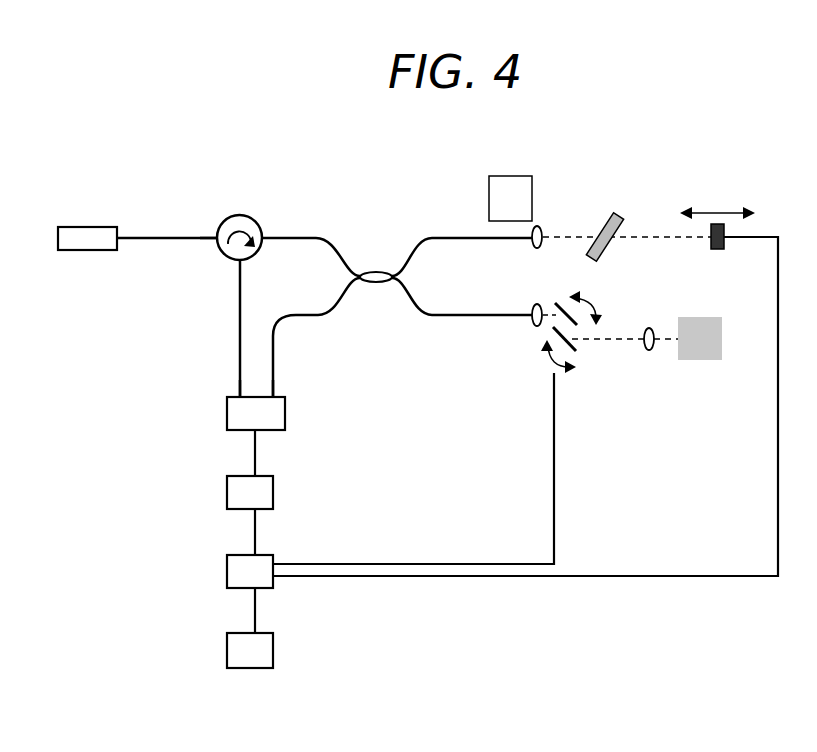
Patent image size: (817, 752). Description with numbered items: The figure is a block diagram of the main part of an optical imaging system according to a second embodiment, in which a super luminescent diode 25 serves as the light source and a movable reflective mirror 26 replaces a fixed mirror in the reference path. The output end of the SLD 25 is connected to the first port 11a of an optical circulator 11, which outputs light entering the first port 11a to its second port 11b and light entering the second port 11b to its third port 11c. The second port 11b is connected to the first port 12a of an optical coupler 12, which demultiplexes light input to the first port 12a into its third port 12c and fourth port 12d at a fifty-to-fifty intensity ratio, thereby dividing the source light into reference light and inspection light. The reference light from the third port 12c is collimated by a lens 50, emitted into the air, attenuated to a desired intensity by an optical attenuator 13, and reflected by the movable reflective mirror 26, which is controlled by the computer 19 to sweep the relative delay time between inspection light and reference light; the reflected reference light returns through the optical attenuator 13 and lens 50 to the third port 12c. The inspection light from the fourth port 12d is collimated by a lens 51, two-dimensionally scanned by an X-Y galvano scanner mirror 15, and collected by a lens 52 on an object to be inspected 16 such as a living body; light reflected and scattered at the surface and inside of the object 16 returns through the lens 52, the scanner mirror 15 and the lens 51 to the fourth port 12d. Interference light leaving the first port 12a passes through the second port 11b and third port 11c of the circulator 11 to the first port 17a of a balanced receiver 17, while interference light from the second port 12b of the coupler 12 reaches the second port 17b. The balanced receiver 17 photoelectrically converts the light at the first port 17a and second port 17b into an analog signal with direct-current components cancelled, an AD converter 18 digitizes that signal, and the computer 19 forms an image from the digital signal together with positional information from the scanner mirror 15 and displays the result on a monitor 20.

The super luminescent diode 25 is at (137, 198).
The optical circulator 11 is at (253, 203).
The first port 11a is at (203, 226).
The second port 11b is at (289, 226).
The third port 11c is at (253, 328).
The optical coupler 12 is at (402, 283).
The first port 12a is at (338, 251).
The second port 12b is at (316, 337).
The third port 12c is at (461, 251).
The fourth port 12d is at (461, 305).
The lens 50 is at (552, 196).
The optical attenuator 13 is at (612, 197).
The movable reflective mirror 26 is at (717, 196).
The object to be inspected 16 is at (715, 303).
The lens 51 is at (506, 342).
The X-Y galvano scanner mirror 15 is at (548, 361).
The lens 52 is at (634, 378).
The balanced receiver 17 is at (227, 402).
The first port 17a is at (220, 385).
The second port 17b is at (291, 385).
The AD converter 18 is at (209, 486).
The computer 19 is at (209, 566).
The monitor 20 is at (209, 646).